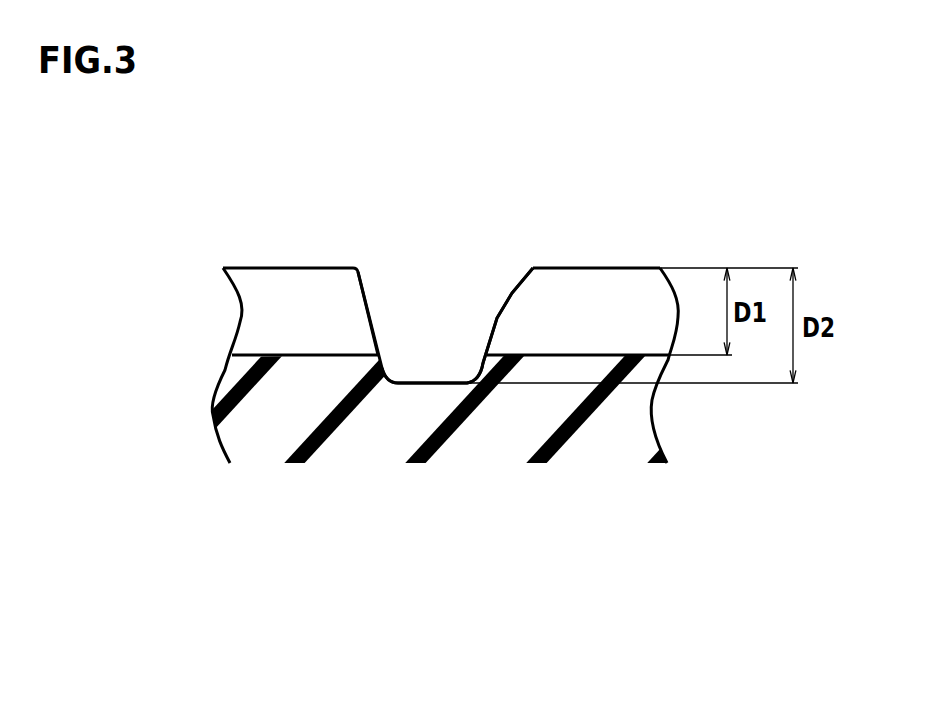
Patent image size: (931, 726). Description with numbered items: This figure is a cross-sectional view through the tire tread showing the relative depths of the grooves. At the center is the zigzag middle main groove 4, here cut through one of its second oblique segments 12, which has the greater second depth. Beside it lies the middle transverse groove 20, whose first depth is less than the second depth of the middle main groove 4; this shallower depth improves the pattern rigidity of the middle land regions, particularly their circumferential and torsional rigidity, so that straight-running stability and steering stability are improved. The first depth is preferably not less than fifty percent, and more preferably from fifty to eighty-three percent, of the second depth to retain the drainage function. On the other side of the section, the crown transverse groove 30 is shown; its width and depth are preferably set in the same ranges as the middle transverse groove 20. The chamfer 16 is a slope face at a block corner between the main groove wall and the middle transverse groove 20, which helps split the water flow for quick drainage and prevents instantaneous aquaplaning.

The crown transverse groove 30 is at (303, 313).
The middle main groove 4 is at (435, 303).
The second oblique segment 12 is at (424, 275).
The chamfer 16 is at (513, 288).
The middle transverse groove 20 is at (560, 312).